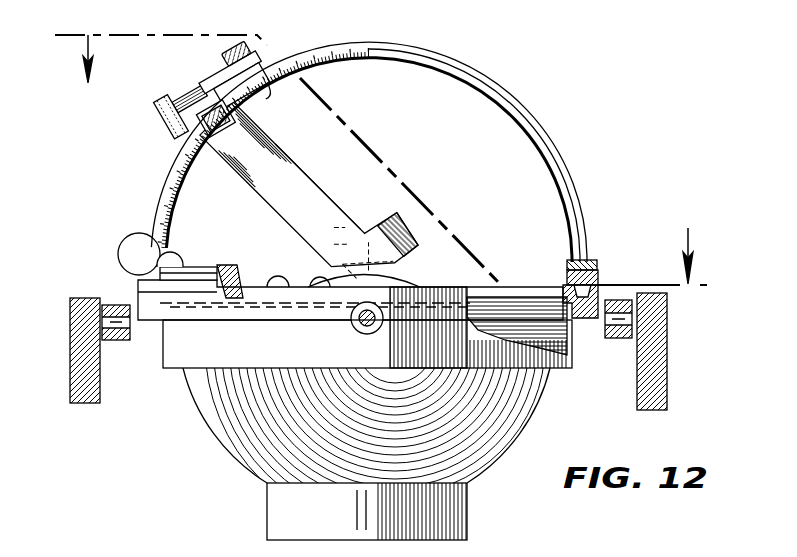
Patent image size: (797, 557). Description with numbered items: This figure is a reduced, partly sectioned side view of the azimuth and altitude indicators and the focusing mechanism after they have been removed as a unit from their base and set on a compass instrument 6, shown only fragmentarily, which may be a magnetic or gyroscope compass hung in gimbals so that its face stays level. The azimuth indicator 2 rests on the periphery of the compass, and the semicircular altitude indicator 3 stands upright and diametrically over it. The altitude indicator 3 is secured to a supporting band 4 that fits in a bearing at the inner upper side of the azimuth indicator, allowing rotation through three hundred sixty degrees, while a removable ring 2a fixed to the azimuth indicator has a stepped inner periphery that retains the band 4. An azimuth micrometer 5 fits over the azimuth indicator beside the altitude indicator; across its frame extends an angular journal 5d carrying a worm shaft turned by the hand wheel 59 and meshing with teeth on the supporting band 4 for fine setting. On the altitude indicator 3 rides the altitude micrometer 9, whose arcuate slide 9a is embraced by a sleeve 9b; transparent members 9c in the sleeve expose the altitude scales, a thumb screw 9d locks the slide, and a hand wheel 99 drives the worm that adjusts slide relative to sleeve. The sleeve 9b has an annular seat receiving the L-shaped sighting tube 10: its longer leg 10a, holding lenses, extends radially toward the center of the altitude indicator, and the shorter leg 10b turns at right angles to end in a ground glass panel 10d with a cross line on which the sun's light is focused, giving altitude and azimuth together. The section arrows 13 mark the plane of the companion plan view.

The azimuth indicator 2 is at (598, 283).
The removable ring 2a is at (597, 272).
The altitude indicator 3 is at (463, 82).
The supporting band 4 is at (585, 262).
The azimuth micrometer 5 is at (175, 268).
The journal 5d is at (182, 255).
The compass instrument 6 is at (70, 397).
The altitude micrometer 9 is at (259, 61).
The slide 9a is at (271, 92).
The sleeve 9b is at (206, 84).
The transparent members 9c is at (212, 131).
The thumb screw 9d is at (240, 42).
The sighting tube 10 is at (312, 187).
The longer leg of sighting tube 10a is at (314, 196).
The shorter leg of sighting tube 10b is at (380, 225).
The ground glass panel 10d is at (412, 190).
The section line 13 is at (385, 160).
The hand wheel 59 is at (133, 252).
The hand wheel 99 is at (168, 132).